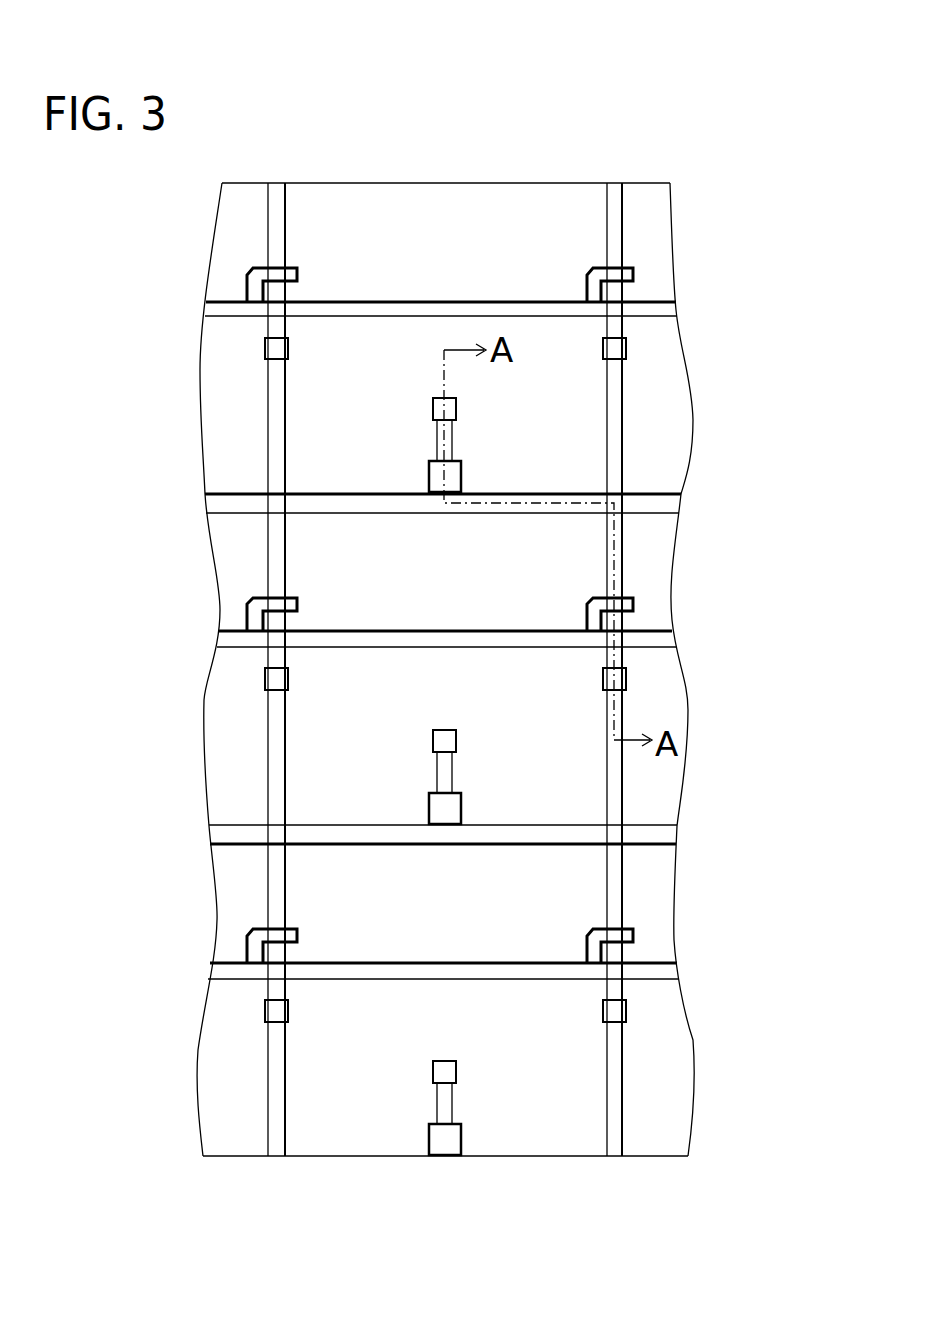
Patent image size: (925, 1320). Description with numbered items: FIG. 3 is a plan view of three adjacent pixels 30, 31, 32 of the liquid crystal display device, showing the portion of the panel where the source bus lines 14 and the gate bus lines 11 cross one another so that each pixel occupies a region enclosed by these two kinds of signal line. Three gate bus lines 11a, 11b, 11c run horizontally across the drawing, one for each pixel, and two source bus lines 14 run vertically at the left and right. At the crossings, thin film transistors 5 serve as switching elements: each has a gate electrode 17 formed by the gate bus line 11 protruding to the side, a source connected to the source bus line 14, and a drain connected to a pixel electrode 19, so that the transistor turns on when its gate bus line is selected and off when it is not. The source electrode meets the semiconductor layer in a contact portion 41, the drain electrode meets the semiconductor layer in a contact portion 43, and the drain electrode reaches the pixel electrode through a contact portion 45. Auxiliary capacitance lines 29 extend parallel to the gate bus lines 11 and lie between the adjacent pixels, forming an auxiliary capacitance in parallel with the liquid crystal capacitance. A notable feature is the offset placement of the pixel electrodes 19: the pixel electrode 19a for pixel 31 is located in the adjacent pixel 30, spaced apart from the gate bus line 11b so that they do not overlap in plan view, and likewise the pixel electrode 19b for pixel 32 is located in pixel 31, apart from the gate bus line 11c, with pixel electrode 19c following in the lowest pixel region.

The pixel 30 is at (646, 212).
The pixel 31 is at (646, 562).
The pixel 32 is at (644, 893).
The gate bus line 11 is at (519, 645).
The gate bus line 11a is at (665, 310).
The gate bus line 11b is at (668, 640).
The gate bus line 11c is at (665, 970).
The source bus line 14 is at (272, 403).
The gate electrode 17 is at (297, 268).
The pixel electrode 19 is at (372, 545).
The pixel electrode 19a is at (345, 213).
The pixel electrode 19b is at (345, 548).
The pixel electrode 19c is at (345, 878).
The auxiliary capacitance line 29 is at (215, 500).
The contact portion 41 is at (603, 678).
The contact portion 43 is at (456, 408).
The contact portion 45 is at (461, 470).
The thin film transistor 5 is at (633, 622).